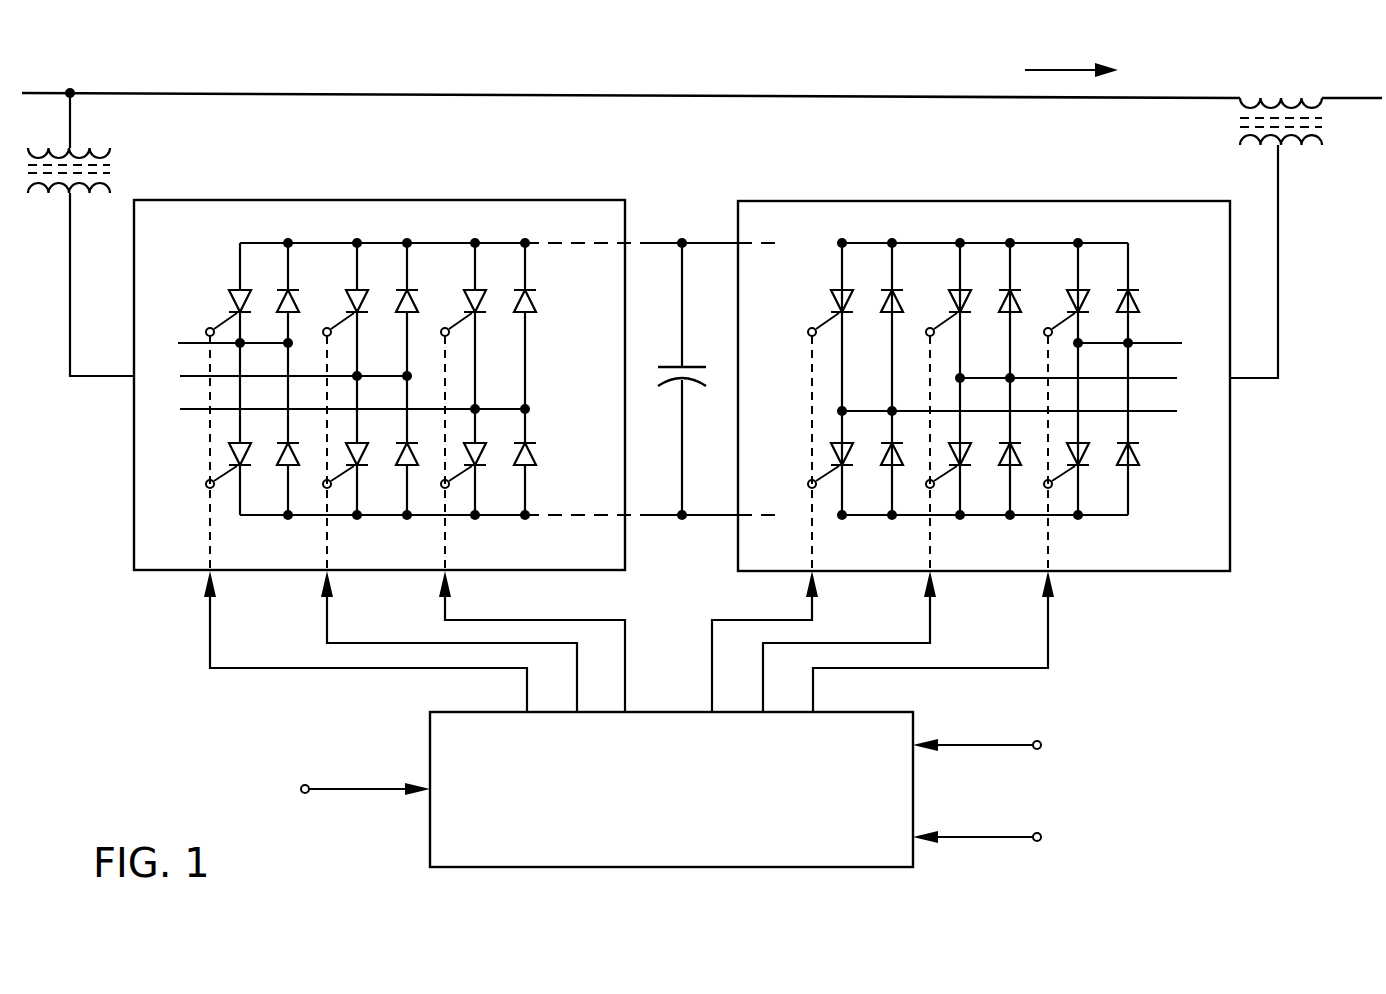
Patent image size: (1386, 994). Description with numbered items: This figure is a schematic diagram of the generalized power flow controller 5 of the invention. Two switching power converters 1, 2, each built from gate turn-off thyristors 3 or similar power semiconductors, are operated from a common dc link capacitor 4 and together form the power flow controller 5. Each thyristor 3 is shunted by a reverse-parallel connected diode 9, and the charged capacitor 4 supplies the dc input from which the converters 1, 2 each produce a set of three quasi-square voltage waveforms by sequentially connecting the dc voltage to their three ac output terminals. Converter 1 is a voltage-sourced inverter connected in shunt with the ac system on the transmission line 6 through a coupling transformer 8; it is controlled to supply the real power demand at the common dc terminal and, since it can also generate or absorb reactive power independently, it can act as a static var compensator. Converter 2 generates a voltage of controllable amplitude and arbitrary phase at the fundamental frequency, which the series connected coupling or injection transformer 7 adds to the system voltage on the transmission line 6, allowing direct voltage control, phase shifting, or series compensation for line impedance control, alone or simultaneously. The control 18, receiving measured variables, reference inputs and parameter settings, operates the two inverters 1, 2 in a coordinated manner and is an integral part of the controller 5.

The switching power converter 1 is at (482, 200).
The switching power converter 2 is at (1060, 201).
The gate turn-off thyristor 3 is at (240, 300).
The dc link capacitor 4 is at (692, 366).
The generalized power flow controller 5 is at (693, 599).
The transmission line 6 is at (388, 94).
The series connected coupling transformer 7 is at (1305, 96).
The coupling transformer 8 is at (90, 150).
The diode 9 is at (295, 290).
The control 18 is at (783, 868).